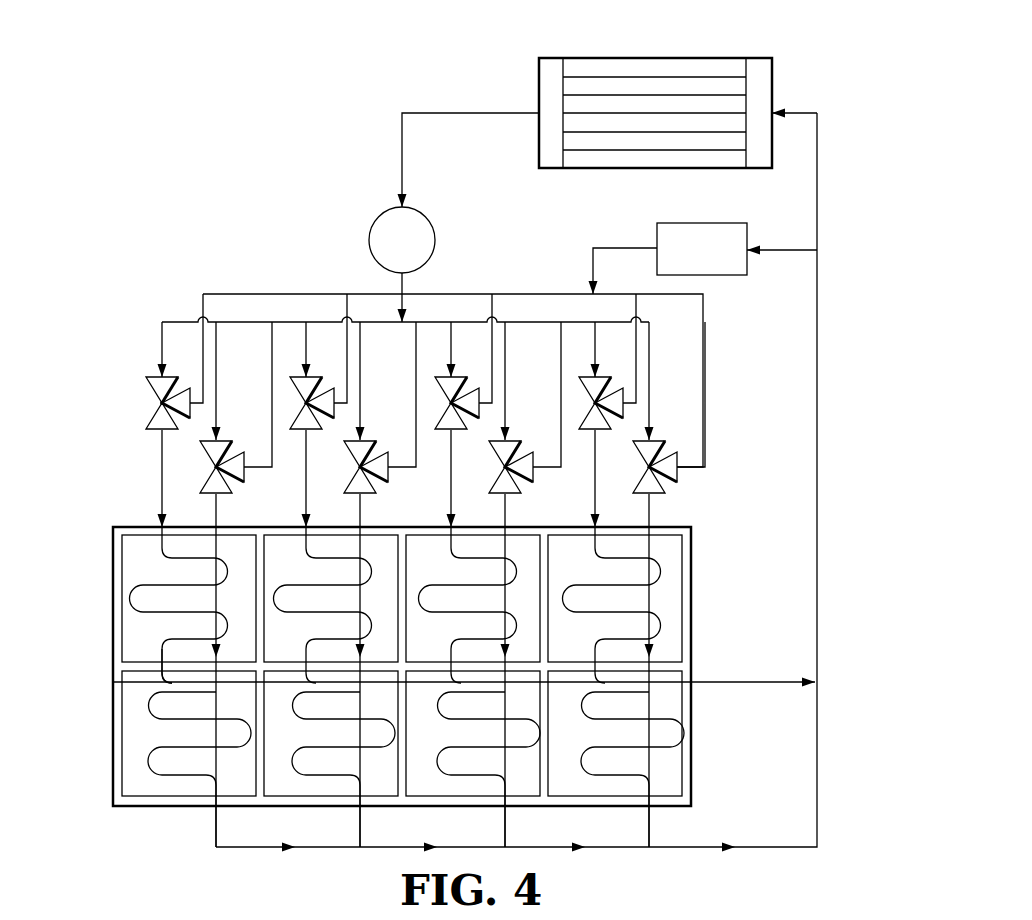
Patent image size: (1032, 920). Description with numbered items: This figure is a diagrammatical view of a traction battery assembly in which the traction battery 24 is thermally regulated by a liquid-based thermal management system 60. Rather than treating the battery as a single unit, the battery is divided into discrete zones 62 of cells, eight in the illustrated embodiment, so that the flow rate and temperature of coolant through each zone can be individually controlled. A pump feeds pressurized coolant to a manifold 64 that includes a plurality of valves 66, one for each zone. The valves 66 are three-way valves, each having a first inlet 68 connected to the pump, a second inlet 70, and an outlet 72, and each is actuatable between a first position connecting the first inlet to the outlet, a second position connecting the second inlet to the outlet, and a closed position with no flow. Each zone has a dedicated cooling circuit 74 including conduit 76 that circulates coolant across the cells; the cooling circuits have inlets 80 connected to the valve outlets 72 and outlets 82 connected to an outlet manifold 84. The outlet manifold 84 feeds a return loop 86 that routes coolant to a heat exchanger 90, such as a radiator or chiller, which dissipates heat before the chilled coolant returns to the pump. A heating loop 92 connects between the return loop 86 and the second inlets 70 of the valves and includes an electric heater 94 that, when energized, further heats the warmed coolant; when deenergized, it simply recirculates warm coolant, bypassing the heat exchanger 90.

The traction battery 24 is at (363, 655).
The thermal management system 60 is at (812, 70).
The zones 62 is at (369, 240).
The manifold 64 is at (154, 570).
The valves 66 is at (157, 403).
The first inlet 68 is at (159, 377).
The second inlet 70 is at (185, 413).
The outlet 72 is at (160, 432).
The cooling circuit 74 is at (136, 578).
The conduit 76 is at (130, 598).
The inlets 80 is at (147, 527).
The outlets 82 is at (160, 666).
The outlet manifold 84 is at (716, 682).
The return loop 86 is at (817, 455).
The heat exchanger 90 is at (645, 58).
The heating loop 92 is at (630, 225).
The heater 94 is at (680, 223).